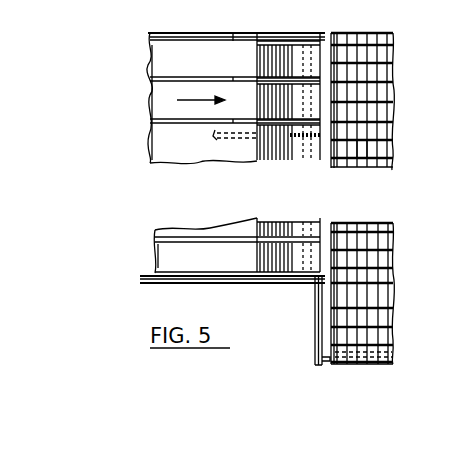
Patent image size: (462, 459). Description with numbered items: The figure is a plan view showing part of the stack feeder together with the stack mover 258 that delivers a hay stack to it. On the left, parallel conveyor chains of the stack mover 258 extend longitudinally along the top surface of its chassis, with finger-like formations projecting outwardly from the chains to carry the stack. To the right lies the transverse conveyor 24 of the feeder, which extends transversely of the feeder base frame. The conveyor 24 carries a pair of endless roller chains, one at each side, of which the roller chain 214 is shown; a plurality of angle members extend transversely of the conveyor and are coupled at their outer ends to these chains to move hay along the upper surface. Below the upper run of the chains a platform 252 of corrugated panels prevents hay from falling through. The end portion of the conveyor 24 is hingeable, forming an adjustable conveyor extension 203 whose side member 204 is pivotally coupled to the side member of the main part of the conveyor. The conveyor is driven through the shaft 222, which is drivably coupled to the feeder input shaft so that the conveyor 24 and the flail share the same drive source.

The transverse conveyor 24 is at (383, 101).
The adjustable conveyor extension 203 is at (334, 378).
The side member 204 is at (316, 342).
The roller chain 214 is at (329, 153).
The shaft 222 is at (383, 308).
The platform 252 is at (375, 148).
The stack mover 258 is at (204, 175).